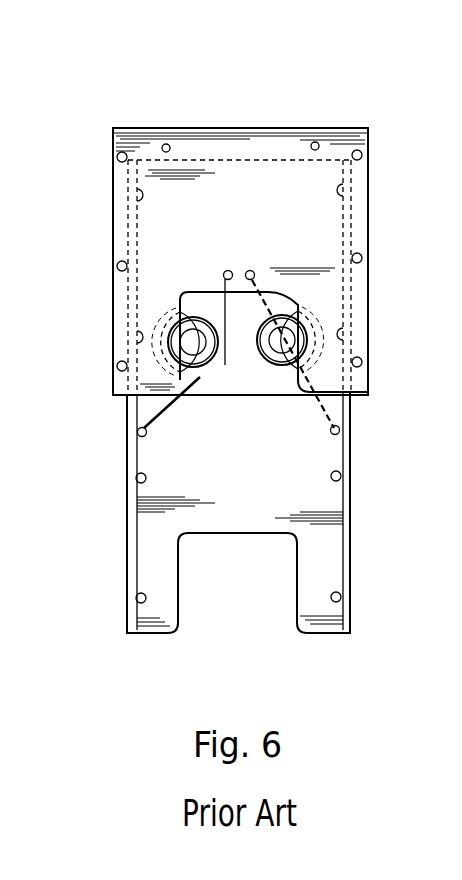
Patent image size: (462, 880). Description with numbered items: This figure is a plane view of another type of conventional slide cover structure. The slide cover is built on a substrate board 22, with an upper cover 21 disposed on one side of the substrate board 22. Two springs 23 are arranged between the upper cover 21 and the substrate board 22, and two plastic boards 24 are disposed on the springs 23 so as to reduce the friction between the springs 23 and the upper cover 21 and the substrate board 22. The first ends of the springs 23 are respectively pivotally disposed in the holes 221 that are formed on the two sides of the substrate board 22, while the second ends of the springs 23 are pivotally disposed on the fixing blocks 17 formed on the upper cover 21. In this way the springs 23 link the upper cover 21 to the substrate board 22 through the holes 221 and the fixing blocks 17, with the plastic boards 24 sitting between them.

The upper cover 21 is at (336, 128).
The substrate board 22 is at (128, 563).
The holes 221 is at (130, 457).
The springs 23 is at (145, 416).
The plastic boards 24 is at (262, 368).
The fixing blocks 17 is at (250, 268).